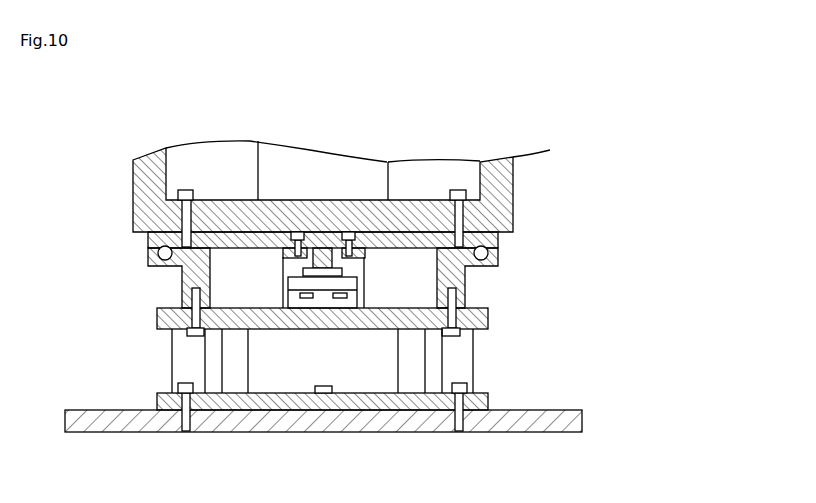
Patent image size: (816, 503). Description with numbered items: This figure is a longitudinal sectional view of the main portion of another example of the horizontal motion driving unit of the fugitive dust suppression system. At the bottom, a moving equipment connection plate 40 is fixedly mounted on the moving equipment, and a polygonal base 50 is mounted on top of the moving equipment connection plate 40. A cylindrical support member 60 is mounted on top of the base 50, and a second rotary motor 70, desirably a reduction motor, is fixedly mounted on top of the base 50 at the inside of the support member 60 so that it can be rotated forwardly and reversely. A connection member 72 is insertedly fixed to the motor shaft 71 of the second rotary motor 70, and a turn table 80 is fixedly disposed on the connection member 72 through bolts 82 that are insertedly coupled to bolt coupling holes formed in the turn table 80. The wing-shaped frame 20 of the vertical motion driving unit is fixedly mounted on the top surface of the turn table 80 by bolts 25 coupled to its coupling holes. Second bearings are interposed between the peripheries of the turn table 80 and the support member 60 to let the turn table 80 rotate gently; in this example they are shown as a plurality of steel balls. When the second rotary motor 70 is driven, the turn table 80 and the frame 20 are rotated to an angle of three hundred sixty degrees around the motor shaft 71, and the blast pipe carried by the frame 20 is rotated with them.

The frame 20 is at (513, 183).
The bolts 25 is at (180, 195).
The moving equipment connection plate 40 is at (537, 410).
The polygonal base 50 is at (157, 315).
The cylindrical support member 60 is at (467, 281).
The second rotary motor 70 is at (303, 331).
The motor shaft 71 is at (330, 232).
The connection member 72 is at (400, 232).
The turn table 80 is at (148, 238).
The bolts 82 is at (293, 231).